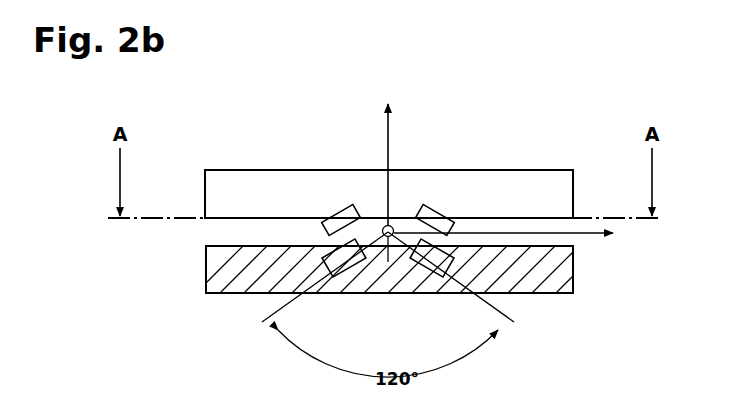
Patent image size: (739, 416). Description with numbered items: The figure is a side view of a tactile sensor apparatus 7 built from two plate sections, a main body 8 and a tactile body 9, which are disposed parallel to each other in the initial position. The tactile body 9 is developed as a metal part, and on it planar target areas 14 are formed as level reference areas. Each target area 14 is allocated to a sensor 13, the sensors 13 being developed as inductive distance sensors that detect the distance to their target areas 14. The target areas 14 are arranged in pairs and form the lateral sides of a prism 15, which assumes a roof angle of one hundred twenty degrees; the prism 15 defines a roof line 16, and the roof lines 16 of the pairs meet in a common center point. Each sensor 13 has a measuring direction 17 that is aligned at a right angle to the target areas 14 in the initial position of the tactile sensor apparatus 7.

The tactile sensor apparatus 7 is at (606, 100).
The main body 8 is at (228, 275).
The tactile body 9 is at (258, 190).
The sensor 13 is at (345, 208).
The target area 14 is at (353, 270).
The prism 15 is at (388, 265).
The roof line 16 is at (409, 222).
The measuring direction 17 is at (366, 238).